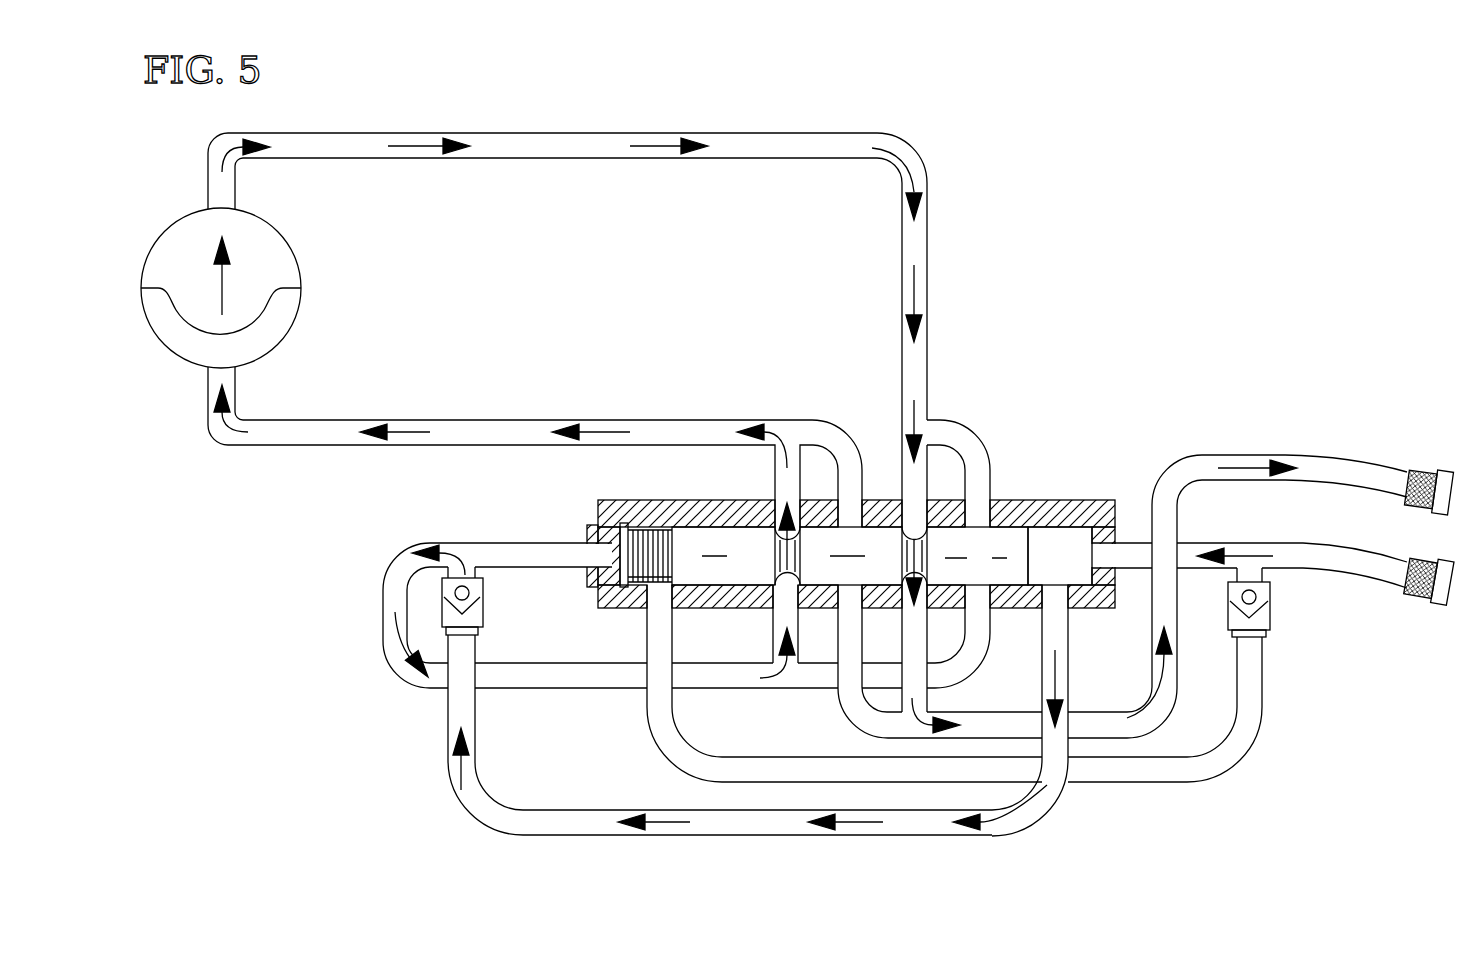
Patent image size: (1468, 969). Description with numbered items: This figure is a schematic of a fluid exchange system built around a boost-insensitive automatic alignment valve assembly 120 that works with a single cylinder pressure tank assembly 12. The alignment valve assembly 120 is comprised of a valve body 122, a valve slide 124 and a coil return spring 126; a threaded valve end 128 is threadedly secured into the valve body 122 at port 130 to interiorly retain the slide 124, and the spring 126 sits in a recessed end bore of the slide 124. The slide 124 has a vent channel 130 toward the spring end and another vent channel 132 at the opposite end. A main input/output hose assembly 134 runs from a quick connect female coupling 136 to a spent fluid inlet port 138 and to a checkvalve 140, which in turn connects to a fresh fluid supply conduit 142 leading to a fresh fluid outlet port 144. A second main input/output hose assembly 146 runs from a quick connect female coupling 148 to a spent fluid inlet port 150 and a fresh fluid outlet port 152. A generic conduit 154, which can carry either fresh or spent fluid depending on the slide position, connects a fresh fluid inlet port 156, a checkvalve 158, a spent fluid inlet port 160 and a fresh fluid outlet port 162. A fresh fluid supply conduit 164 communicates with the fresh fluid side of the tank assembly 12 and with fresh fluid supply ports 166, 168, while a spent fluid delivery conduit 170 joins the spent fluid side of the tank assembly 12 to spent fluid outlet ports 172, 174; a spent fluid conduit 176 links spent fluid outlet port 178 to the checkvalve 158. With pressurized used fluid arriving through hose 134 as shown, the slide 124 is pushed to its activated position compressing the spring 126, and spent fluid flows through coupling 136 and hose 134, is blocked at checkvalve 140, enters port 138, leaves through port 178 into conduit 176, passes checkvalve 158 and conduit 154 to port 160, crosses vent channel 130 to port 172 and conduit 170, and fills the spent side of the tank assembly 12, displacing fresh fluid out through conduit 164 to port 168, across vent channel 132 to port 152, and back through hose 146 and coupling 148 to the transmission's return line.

The single cylinder pressure tank assembly 12 is at (319, 228).
The automatic alignment valve assembly 120 is at (562, 588).
The valve body 122 is at (1045, 535).
The valve slide 124 is at (1005, 545).
The coil return spring 126 is at (612, 595).
The threaded valve end 128 is at (630, 510).
The vent channel 130 is at (757, 557).
The vent channel 132 is at (1090, 545).
The main input/output hose assembly 134 is at (1300, 545).
The quick connect female coupling 136 is at (1420, 603).
The spent fluid inlet port 138 is at (1108, 540).
The checkvalve 140 is at (1272, 615).
The fresh fluid supply conduit 142 is at (1262, 765).
The fresh fluid outlet port 144 is at (655, 690).
The main input/output hose assembly 146 is at (1178, 660).
The quick connect female coupling 148 is at (1433, 470).
The spent fluid inlet port 150 is at (845, 648).
The fresh fluid outlet port 152 is at (910, 620).
The generic conduit 154 is at (378, 640).
The fresh fluid inlet port 156 is at (560, 548).
The checkvalve 158 is at (440, 590).
The spent fluid inlet port 160 is at (782, 607).
The fresh fluid outlet port 162 is at (975, 608).
The fresh fluid supply conduit 164 is at (930, 150).
The fresh fluid supply port 166 is at (982, 497).
The fresh fluid supply port 168 is at (910, 500).
The spent fluid delivery conduit 170 is at (450, 420).
The spent fluid outlet port 172 is at (790, 530).
The spent fluid outlet port 174 is at (860, 497).
The spent fluid conduit 176 is at (755, 836).
The spent fluid outlet port 178 is at (1057, 608).